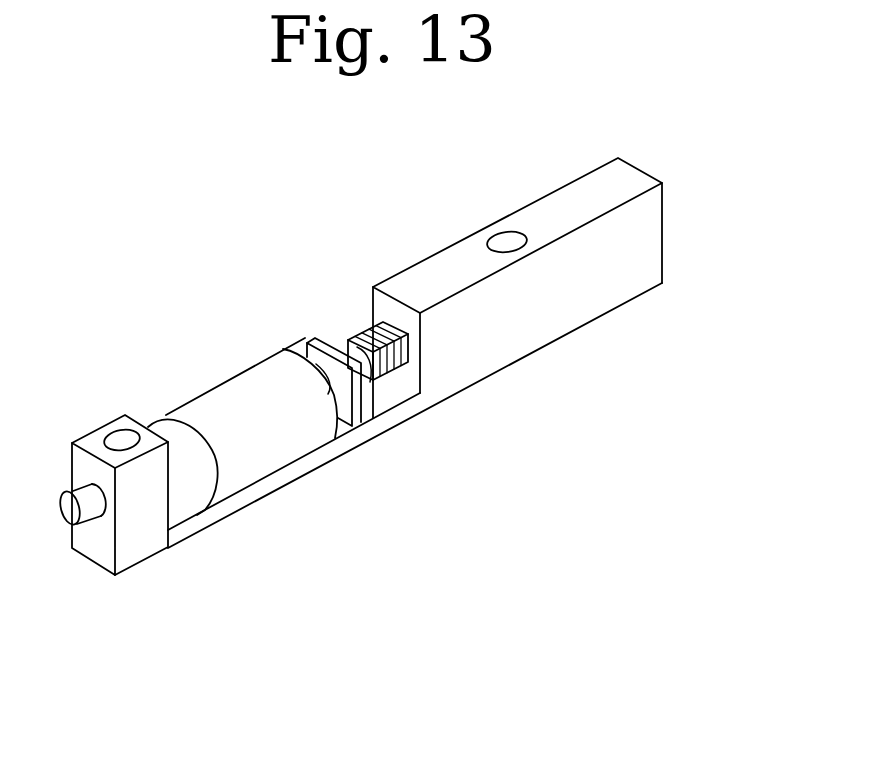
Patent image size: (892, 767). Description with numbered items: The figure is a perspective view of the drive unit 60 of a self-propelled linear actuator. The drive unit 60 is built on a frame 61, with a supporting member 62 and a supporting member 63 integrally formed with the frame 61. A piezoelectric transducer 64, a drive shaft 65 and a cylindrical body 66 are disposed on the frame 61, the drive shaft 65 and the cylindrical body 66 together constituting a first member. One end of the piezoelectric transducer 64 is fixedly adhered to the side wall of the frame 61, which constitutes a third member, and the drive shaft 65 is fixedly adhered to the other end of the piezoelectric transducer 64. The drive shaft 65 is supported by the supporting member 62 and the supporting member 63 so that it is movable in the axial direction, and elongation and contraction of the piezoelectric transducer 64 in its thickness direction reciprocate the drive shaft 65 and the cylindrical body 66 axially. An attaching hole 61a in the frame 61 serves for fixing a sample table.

The drive unit 60 is at (505, 478).
The frame 61 is at (560, 281).
The attaching hole 61a is at (503, 240).
The supporting member 62 is at (360, 422).
The supporting member 63 is at (143, 547).
The piezoelectric transducer 64 is at (403, 368).
The drive shaft 65 is at (333, 345).
The cylindrical body 66 is at (276, 448).